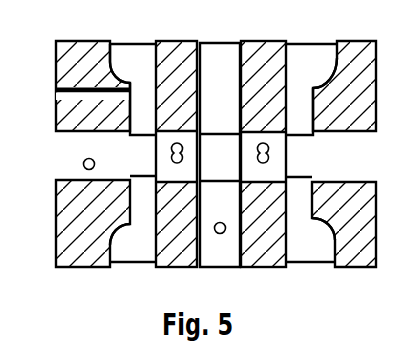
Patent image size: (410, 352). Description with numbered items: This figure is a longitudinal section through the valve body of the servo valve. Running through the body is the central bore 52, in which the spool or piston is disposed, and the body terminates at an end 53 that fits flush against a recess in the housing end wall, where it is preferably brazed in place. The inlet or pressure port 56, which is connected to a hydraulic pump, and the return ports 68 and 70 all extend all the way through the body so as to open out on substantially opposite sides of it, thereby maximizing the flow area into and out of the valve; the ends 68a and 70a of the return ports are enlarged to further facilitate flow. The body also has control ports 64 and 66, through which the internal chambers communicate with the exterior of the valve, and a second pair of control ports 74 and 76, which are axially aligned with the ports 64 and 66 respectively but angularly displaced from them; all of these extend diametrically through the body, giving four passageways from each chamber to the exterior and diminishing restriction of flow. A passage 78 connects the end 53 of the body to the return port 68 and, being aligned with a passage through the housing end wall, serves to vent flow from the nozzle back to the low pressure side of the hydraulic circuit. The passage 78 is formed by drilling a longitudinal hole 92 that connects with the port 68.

The central bore 52 is at (364, 162).
The end of the valve body 53 is at (59, 229).
The inlet or pressure port 56 is at (220, 55).
The control port 64 is at (177, 163).
The control port 66 is at (262, 163).
The return port 68 is at (143, 57).
The enlarged end of return port 68a is at (121, 43).
The return port 70 is at (297, 56).
The enlarged end of return port 70a is at (327, 56).
The control port 74 is at (177, 143).
The control port 76 is at (265, 143).
The passage 78 is at (62, 97).
The longitudinal hole 92 is at (107, 97).